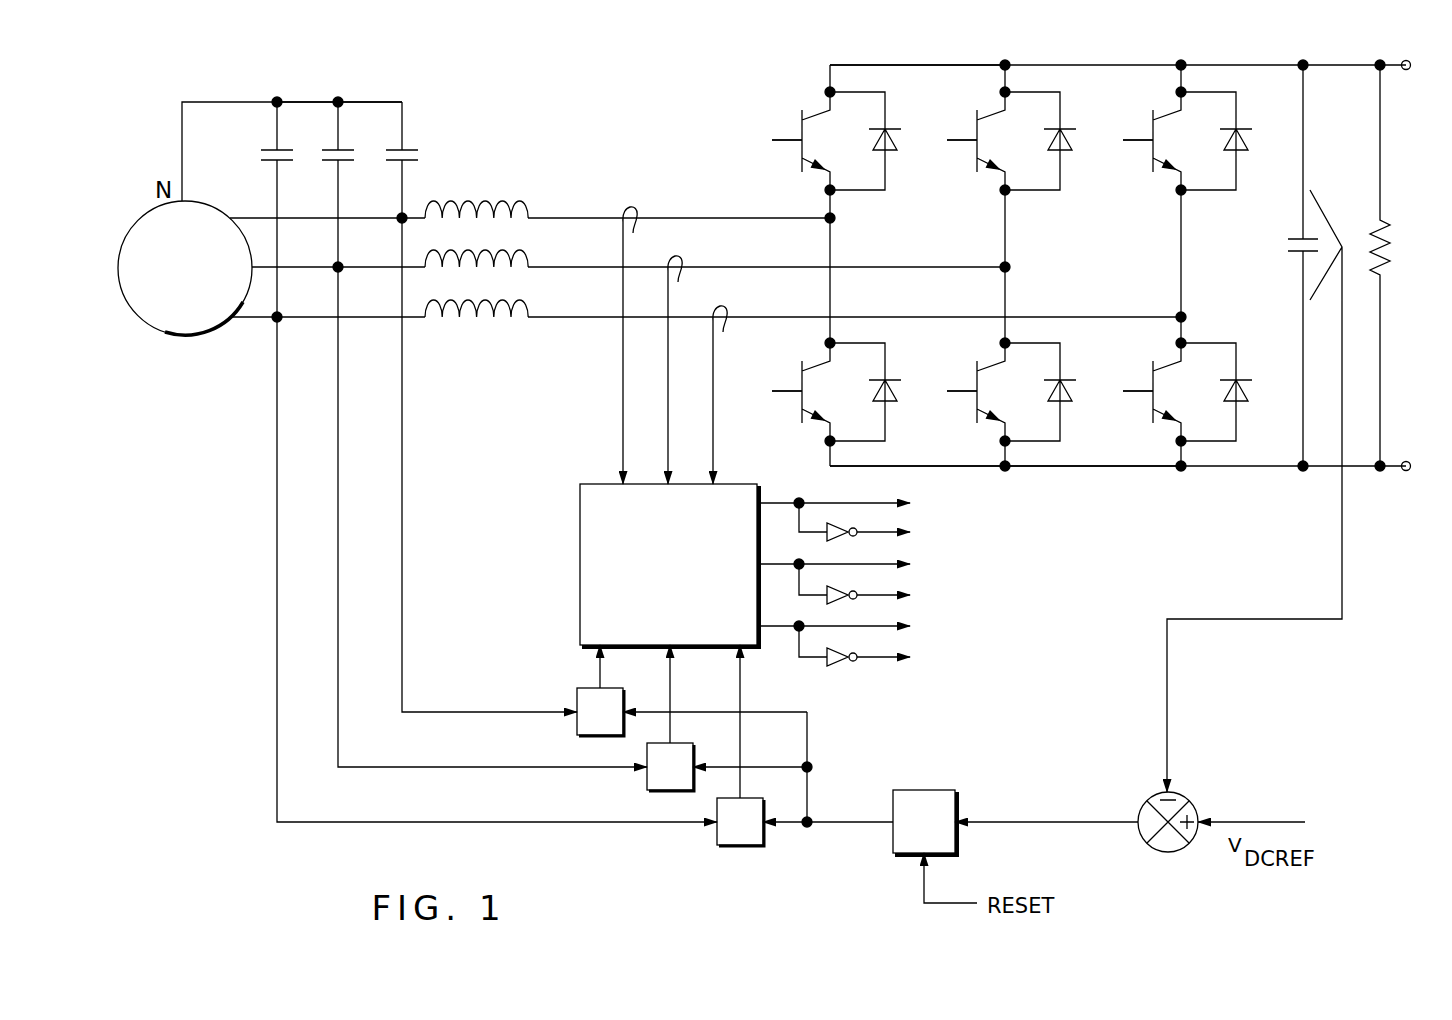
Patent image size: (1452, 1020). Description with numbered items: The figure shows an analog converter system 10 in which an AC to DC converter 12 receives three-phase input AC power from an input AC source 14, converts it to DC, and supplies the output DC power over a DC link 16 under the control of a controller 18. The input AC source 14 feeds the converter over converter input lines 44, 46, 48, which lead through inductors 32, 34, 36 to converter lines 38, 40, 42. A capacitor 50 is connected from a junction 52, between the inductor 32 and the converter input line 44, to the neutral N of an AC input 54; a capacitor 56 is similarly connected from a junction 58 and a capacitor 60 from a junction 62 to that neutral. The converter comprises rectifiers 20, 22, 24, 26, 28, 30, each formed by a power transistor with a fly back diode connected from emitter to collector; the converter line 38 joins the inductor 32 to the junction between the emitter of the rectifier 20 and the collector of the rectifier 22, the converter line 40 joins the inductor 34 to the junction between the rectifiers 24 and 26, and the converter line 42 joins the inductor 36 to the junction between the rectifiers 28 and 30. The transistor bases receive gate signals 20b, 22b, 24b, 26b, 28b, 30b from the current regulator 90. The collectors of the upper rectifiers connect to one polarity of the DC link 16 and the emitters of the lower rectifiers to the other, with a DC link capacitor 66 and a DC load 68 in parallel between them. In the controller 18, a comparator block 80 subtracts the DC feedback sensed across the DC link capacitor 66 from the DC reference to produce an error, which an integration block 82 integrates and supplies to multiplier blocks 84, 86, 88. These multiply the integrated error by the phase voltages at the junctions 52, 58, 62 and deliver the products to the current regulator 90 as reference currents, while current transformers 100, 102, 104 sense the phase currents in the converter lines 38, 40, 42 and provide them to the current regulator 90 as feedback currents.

The converter system 10 is at (685, 142).
The AC to DC converter 12 is at (978, 453).
The input AC source 14 is at (500, 127).
The DC link 16 is at (1390, 485).
The controller 18 is at (980, 672).
The rectifier 20 is at (897, 85).
The rectifier 22 is at (808, 437).
The rectifier 24 is at (1083, 90).
The rectifier 26 is at (1083, 335).
The rectifier 28 is at (1208, 200).
The rectifier 30 is at (1222, 452).
The gate of transistor 20 20b is at (783, 138).
The gate of transistor 22 22b is at (790, 392).
The gate of transistor 24 24b is at (948, 140).
The gate of transistor 26 26b is at (955, 392).
The gate of transistor 28 28b is at (1122, 140).
The gate of transistor 30 30b is at (1125, 392).
The inductor 32 is at (462, 197).
The inductor 34 is at (520, 257).
The inductor 36 is at (477, 308).
The converter line 38 is at (730, 215).
The converter line 40 is at (770, 266).
The converter line 42 is at (572, 318).
The converter input line 44 is at (258, 216).
The converter input line 46 is at (285, 265).
The converter input line 48 is at (250, 317).
The capacitor 50 is at (410, 145).
The junction 52 is at (395, 217).
The AC input 54 is at (133, 317).
The capacitor 56 is at (347, 143).
The junction 58 is at (340, 268).
The capacitor 60 is at (265, 148).
The junction 62 is at (278, 318).
The DC link capacitor 66 is at (1300, 253).
The DC load 68 is at (1390, 232).
The comparator block 80 is at (1180, 795).
The integration block 82 is at (930, 790).
The multiplier block 84 is at (580, 688).
The multiplier block 86 is at (650, 790).
The multiplier block 88 is at (730, 845).
The current regulator 90 is at (580, 520).
The current transformer 100 is at (638, 205).
The current transformer 102 is at (668, 258).
The current transformer 104 is at (732, 295).